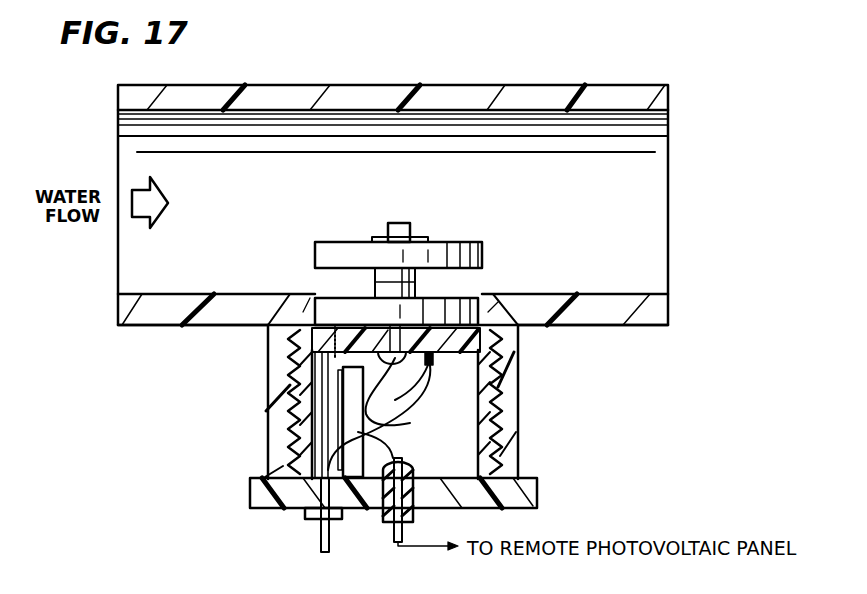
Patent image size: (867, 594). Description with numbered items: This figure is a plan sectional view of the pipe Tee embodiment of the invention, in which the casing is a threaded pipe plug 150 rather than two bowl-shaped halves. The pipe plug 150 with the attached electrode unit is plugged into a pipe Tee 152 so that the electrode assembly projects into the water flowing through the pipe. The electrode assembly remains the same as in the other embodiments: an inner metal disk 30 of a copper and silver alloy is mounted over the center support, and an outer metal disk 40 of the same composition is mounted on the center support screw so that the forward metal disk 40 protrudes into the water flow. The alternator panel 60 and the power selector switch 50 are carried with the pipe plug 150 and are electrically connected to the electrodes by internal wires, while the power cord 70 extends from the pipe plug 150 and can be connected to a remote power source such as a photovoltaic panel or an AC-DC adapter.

The inner metal disk 30 is at (482, 254).
The outer metal disk 40 is at (450, 312).
The power selector switch 50 is at (320, 548).
The alternator panel 60 is at (390, 419).
The power wires 70 is at (390, 524).
The threaded pipe plug 150 is at (528, 489).
The pipe Tee 152 is at (608, 318).